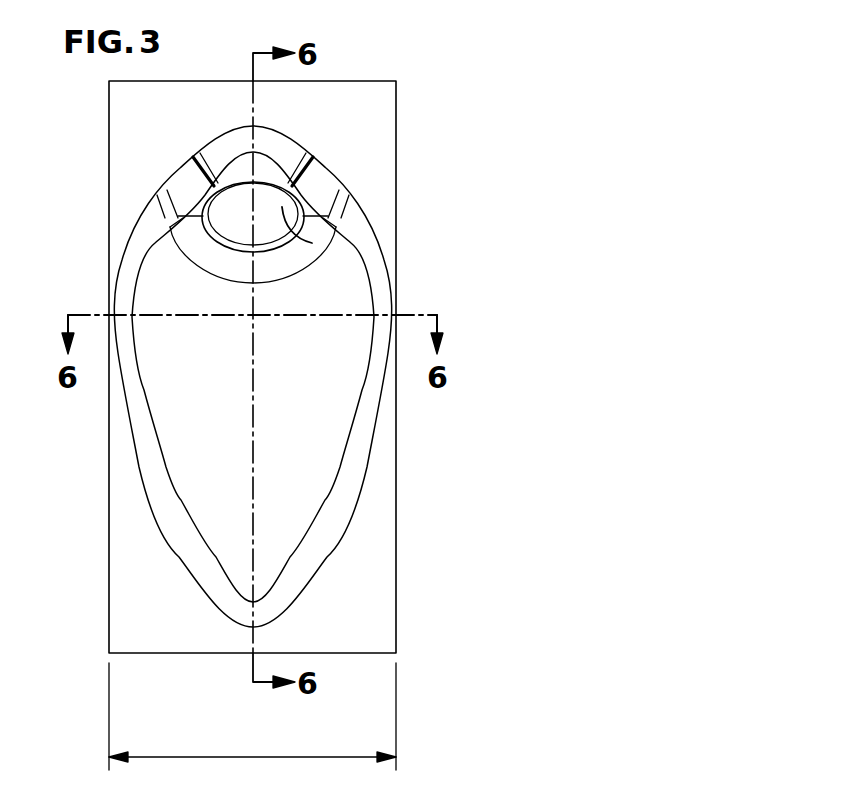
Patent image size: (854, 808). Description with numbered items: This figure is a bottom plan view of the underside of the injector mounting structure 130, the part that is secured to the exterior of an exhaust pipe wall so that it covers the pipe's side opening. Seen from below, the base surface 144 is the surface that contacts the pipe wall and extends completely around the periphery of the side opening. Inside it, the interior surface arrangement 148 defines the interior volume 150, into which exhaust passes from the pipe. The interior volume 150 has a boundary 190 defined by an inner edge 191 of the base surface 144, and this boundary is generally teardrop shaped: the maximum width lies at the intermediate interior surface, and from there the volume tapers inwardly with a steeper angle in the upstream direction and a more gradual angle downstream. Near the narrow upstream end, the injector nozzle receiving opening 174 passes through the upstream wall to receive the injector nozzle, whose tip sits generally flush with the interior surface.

The injector mounting structure 130 is at (398, 119).
The base surface 144 is at (152, 111).
The interior surface arrangement 148 is at (337, 368).
The interior volume 150 is at (302, 455).
The injector nozzle receiving opening 174 is at (320, 238).
The boundary 190 is at (365, 467).
The inner edge 191 is at (353, 500).